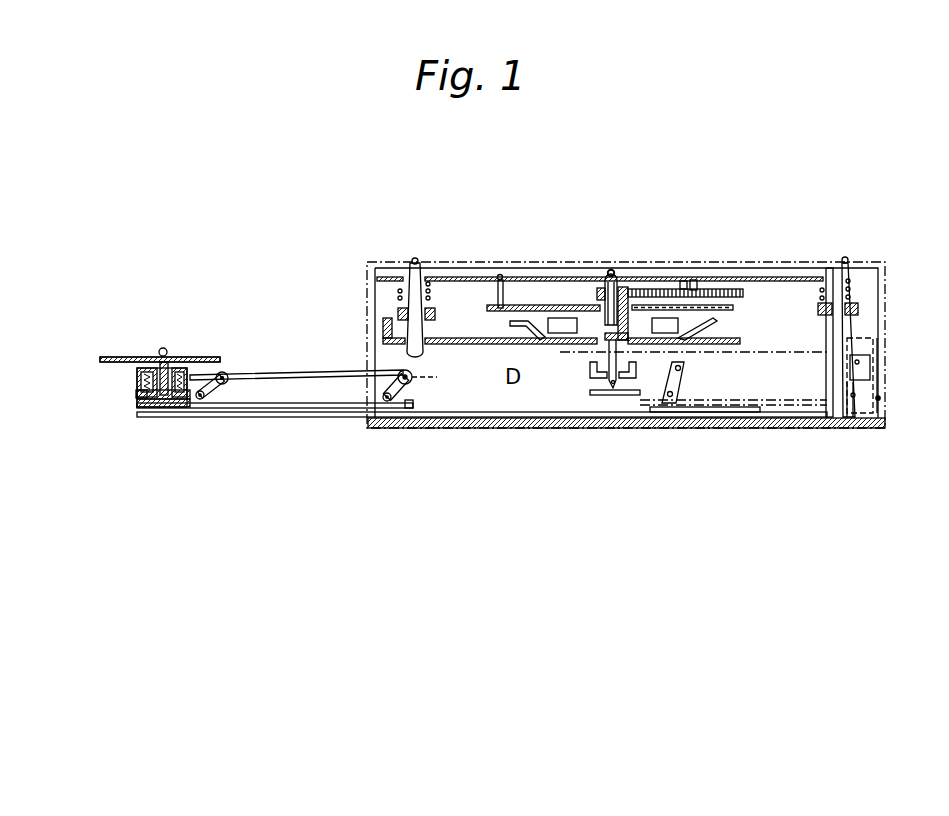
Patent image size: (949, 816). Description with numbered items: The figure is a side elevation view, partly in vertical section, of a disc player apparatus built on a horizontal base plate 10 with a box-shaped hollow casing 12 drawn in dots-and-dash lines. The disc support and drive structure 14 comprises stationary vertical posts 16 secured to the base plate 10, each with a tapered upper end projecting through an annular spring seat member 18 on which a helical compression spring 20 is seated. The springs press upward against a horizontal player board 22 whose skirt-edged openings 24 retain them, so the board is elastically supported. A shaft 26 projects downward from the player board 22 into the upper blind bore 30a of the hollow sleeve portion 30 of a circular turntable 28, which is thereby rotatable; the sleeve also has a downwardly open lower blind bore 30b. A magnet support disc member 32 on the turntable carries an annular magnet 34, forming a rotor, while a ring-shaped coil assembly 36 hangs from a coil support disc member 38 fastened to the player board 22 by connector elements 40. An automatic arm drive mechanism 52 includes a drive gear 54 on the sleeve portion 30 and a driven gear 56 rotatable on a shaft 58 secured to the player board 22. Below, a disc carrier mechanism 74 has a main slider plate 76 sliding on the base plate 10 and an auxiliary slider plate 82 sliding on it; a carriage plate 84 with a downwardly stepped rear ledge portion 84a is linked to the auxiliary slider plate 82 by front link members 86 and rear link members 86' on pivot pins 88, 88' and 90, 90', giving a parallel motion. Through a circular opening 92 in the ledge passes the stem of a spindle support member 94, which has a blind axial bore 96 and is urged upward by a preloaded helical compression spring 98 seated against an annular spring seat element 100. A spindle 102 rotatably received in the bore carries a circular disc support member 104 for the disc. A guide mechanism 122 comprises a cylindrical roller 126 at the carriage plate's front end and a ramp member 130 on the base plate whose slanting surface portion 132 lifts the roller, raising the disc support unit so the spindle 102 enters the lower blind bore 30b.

The horizontal base plate 10 is at (603, 430).
The hollow casing 12 is at (797, 263).
The disc support and drive structure 14 is at (538, 357).
The stationary vertical posts 16 is at (428, 329).
The annular spring seat member 18 is at (398, 314).
The helical compression spring 20 is at (398, 293).
The horizontal player board 22 is at (453, 277).
The openings 24 is at (411, 267).
The shaft 26 is at (607, 273).
The circular turntable 28 is at (460, 345).
The hollow sleeve portion 30 is at (629, 295).
The upper blind bore 30a is at (612, 272).
The lower blind bore 30b is at (607, 336).
The magnet support disc member 32 is at (716, 320).
The annular magnet 34 is at (704, 345).
The ring-shaped coil assembly 36 is at (733, 308).
The coil support disc member 38 is at (523, 305).
The connector elements 40 is at (499, 280).
The automatic arm drive mechanism 52 is at (672, 287).
The drive gear 54 is at (597, 293).
The driven gear 56 is at (737, 288).
The shaft 58 is at (705, 285).
The disc carrier mechanism 74 is at (242, 334).
The main slider plate 76 is at (308, 417).
The auxiliary slider plate 82 is at (267, 408).
The carriage plate 84 is at (307, 372).
The downwardly stepped rear ledge portion 84a is at (135, 392).
The front link members 86 is at (397, 422).
The rear link members 86' is at (239, 389).
The pivot pin 88 is at (355, 392).
The pivot pin 88' is at (216, 426).
The pivot pin 90 is at (433, 389).
The pivot pin 90' is at (249, 357).
The circular opening 92 is at (152, 405).
The spindle support member 94 is at (167, 405).
The blind axial bore 96 is at (152, 370).
The preloaded helical compression spring 98 is at (141, 380).
The annular spring seat element 100 is at (177, 370).
The spindle 102 is at (163, 348).
The circular disc support member 104 is at (212, 357).
The guide mechanism 122 is at (879, 398).
The cylindrical roller 126 is at (443, 377).
The ramp member 130 is at (875, 370).
The slanting surface portion 132 is at (847, 382).